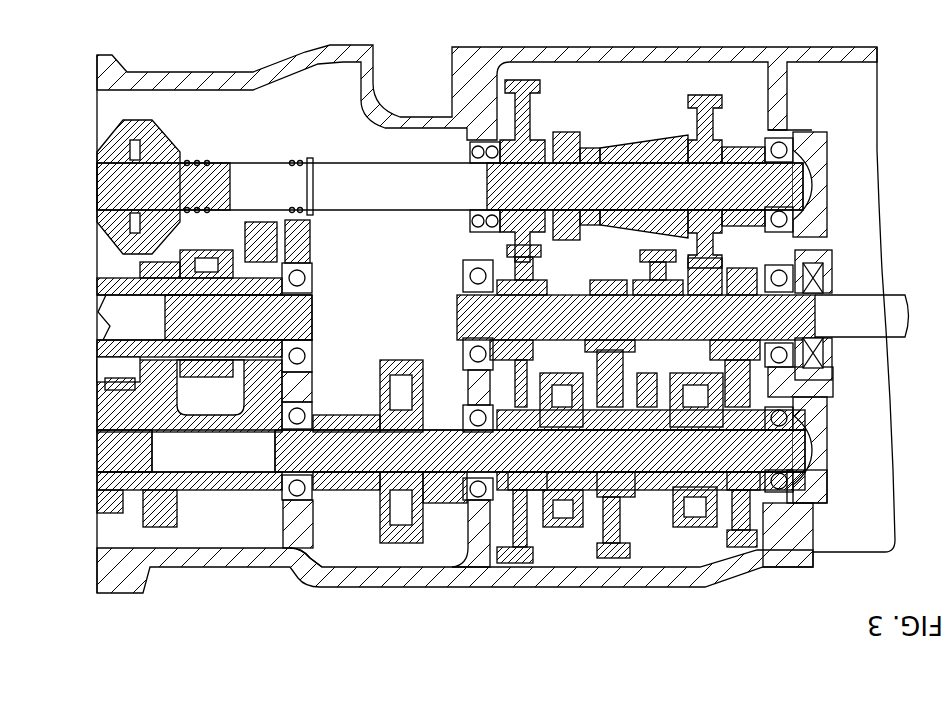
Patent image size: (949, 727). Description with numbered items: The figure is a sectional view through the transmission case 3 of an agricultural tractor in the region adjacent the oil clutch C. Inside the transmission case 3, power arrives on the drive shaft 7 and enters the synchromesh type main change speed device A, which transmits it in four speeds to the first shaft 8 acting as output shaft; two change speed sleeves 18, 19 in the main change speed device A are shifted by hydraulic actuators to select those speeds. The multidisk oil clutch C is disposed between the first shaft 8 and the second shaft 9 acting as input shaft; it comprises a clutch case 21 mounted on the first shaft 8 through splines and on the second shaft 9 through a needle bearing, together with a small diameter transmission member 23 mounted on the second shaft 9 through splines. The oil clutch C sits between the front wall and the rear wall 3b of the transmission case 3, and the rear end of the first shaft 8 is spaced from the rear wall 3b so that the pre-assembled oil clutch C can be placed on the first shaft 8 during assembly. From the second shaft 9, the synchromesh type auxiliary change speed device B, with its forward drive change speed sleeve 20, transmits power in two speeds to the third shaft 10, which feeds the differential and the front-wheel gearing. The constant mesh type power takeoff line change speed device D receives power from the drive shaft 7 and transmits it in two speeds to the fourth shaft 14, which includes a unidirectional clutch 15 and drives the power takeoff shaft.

The transmission case 3 is at (481, 627).
The rear wall 3b is at (307, 617).
The drive shaft 7 is at (918, 372).
The first shaft 8 is at (907, 470).
The second shaft 9 is at (200, 597).
The third shaft 10 is at (117, 320).
The fourth shaft 14 is at (337, 172).
The unidirectional clutch 15 is at (190, 118).
The change speed sleeve 18 is at (664, 620).
The change speed sleeve 19 is at (571, 614).
The forward drive change speed sleeve 20 is at (235, 241).
The clutch case 21 is at (427, 548).
The small diameter transmission member 23 is at (345, 503).
The main change speed device A is at (750, 625).
The auxiliary change speed device B is at (353, 230).
The oil clutch C is at (372, 632).
The power takeoff line change speed device D is at (757, 37).